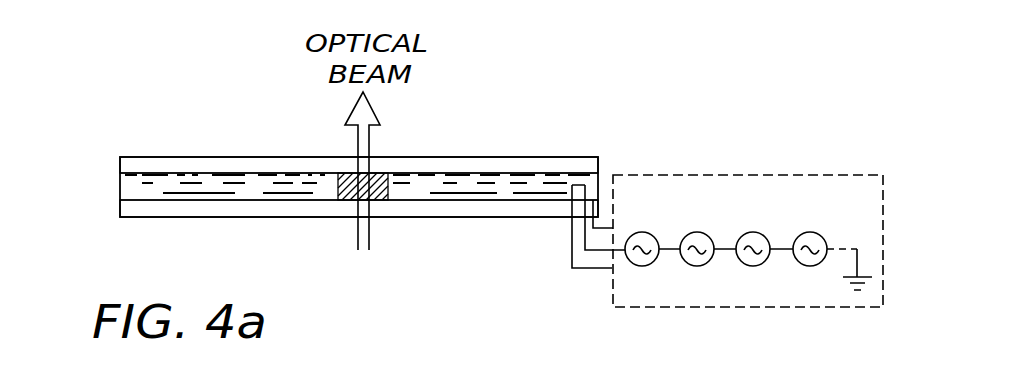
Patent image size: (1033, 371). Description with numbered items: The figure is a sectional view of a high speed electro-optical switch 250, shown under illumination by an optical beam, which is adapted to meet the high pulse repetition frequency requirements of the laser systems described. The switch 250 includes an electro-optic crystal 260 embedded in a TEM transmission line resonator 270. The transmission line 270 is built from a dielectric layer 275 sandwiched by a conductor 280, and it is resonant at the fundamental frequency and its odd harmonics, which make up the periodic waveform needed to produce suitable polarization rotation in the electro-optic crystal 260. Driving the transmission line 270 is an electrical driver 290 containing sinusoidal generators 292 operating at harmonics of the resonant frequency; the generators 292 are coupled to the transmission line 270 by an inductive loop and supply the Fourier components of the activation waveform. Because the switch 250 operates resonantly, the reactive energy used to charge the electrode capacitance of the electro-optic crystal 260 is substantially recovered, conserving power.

The high speed electro-optical switch 250 is at (748, 188).
The electro-optic crystal 260 is at (346, 200).
The TEM transmission line resonator 270 is at (573, 144).
The dielectric layer 275 is at (143, 186).
The conductor 280 is at (225, 164).
The electrical driver 290 is at (748, 265).
The sinusoidal generators 292 is at (648, 263).